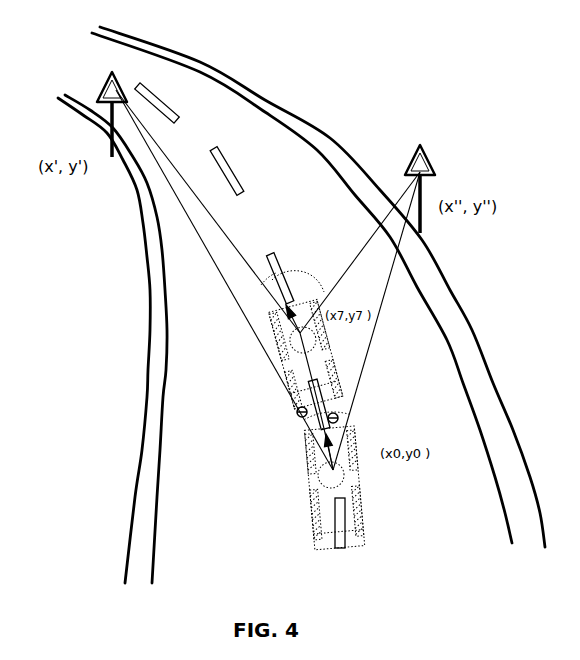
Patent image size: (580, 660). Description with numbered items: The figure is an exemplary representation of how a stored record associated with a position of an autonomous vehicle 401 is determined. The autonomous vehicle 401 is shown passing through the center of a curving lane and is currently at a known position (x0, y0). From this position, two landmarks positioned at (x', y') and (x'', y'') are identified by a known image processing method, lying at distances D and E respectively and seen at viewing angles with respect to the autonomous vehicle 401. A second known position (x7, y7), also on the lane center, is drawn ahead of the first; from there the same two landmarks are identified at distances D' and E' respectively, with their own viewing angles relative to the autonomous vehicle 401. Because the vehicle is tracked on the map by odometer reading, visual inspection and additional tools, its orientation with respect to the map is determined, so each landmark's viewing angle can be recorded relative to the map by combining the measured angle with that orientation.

The autonomous vehicle 401 is at (347, 402).
The distance to first landmark from position (x0, y0) D is at (224, 280).
The distance to first landmark from position (x7, y7) D' is at (209, 213).
The distance to second landmark from position (x0, y0) E is at (376, 321).
The distance to second landmark from position (x7, y7) E' is at (360, 252).